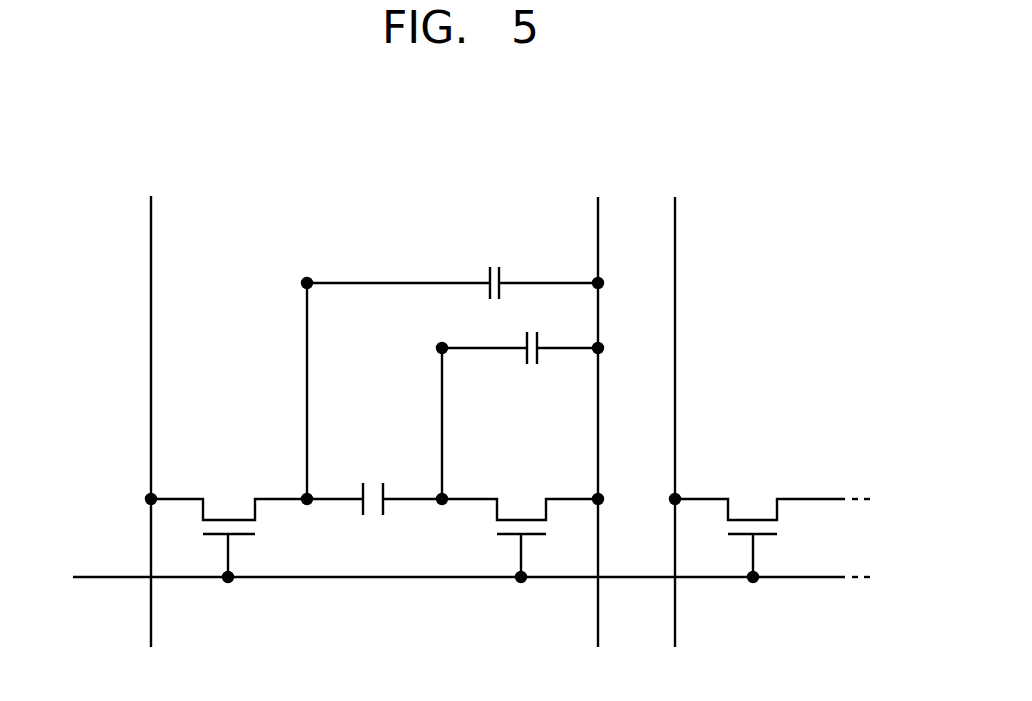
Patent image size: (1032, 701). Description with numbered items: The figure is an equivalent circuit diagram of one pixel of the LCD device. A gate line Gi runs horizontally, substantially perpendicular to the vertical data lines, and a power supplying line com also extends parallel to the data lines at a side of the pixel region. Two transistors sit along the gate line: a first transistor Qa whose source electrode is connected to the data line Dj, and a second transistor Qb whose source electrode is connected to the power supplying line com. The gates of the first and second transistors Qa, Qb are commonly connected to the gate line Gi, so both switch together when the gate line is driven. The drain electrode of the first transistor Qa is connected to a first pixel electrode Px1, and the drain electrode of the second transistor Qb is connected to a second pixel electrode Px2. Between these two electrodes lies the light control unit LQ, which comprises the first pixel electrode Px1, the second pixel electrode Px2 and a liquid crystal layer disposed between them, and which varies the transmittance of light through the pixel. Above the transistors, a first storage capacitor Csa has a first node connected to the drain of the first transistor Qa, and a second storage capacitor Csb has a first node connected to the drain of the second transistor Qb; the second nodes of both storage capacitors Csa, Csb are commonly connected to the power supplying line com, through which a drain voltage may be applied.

The data line Dj is at (152, 400).
The gate line Gi is at (456, 578).
The power supplying line com is at (602, 385).
The first transistor Qa is at (226, 548).
The second transistor Qb is at (656, 548).
The light control unit LQ is at (374, 499).
The first pixel electrode Px1 is at (363, 490).
The second pixel electrode Px2 is at (383, 490).
The first storage capacitor Csa is at (452, 366).
The second storage capacitor Csb is at (520, 398).